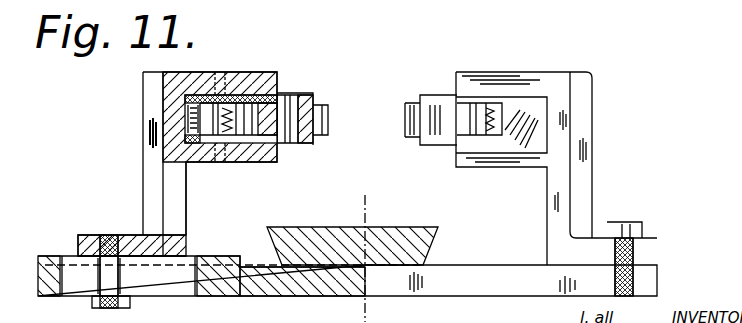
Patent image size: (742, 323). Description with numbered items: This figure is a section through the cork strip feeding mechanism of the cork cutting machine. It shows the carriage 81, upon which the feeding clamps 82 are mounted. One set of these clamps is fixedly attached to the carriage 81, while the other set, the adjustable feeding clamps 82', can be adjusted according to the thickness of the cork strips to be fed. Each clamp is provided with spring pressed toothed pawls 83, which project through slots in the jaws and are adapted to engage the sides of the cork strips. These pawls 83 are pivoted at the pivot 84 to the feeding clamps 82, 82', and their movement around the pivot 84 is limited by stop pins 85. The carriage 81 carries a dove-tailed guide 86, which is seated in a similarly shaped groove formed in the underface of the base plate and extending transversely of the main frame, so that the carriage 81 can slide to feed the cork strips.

The carriage 81 is at (498, 297).
The feeding clamps 82 is at (531, 155).
The adjustable feeding clamps 82' is at (177, 150).
The spring pressed toothed pawls 83 is at (326, 105).
The pivot 84 is at (297, 93).
The stop pins 85 is at (258, 95).
The dove-tailed guide 86 is at (322, 227).